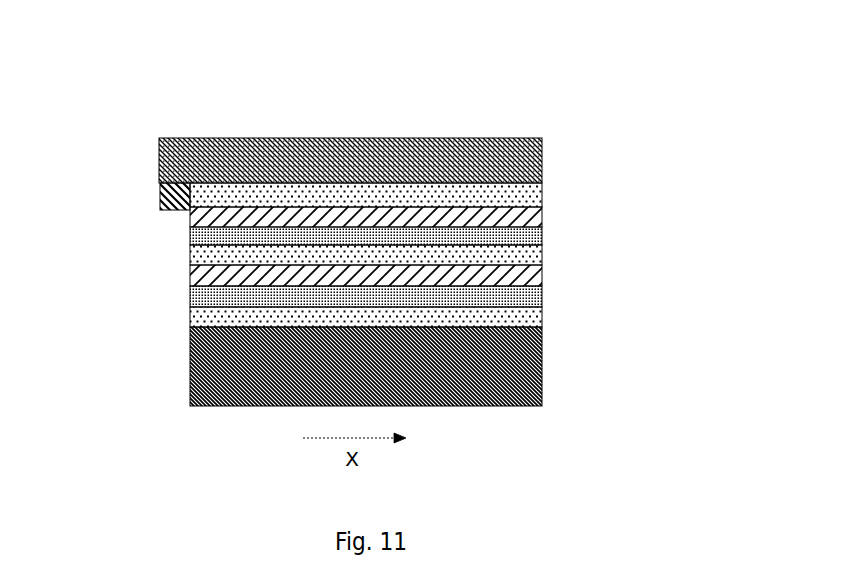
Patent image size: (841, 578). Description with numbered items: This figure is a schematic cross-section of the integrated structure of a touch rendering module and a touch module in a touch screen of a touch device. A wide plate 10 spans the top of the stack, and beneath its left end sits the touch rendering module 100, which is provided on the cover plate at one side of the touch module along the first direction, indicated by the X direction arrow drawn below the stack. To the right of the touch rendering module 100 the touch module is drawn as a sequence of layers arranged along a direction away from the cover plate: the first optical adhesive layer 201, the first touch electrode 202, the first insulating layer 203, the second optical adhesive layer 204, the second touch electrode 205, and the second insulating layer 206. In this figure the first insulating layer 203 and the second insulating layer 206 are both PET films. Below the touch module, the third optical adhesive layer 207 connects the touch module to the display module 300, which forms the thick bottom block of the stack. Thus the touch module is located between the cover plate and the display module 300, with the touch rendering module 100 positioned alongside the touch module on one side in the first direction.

The top layer / cover 10 is at (330, 138).
The touch rendering module 100 is at (161, 202).
The first optical adhesive layer 201 is at (542, 193).
The first touch electrode 202 is at (542, 210).
The first insulating layer 203 is at (542, 240).
The second optical adhesive layer 204 is at (542, 260).
The second touch electrode 205 is at (542, 277).
The second insulating layer 206 is at (542, 302).
The third optical adhesive layer 207 is at (190, 327).
The display module 300 is at (190, 408).